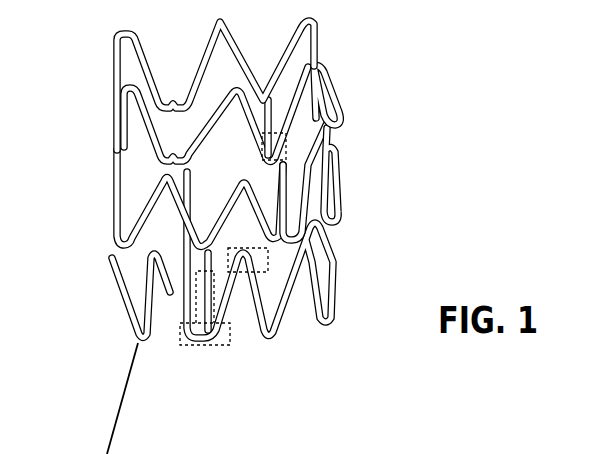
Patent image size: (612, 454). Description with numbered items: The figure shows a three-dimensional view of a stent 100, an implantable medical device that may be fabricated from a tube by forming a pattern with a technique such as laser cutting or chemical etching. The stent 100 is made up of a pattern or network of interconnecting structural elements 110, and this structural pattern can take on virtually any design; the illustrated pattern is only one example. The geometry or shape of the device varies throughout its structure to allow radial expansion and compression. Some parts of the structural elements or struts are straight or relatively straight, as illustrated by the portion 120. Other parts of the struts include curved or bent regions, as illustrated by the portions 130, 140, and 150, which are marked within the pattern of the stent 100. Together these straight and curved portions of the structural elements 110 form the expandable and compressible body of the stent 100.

The stent 100 is at (249, 227).
The structural elements 110 is at (150, 213).
The portion 120 is at (212, 302).
The portion 130 is at (183, 345).
The portion 140 is at (234, 251).
The portion 150 is at (263, 148).